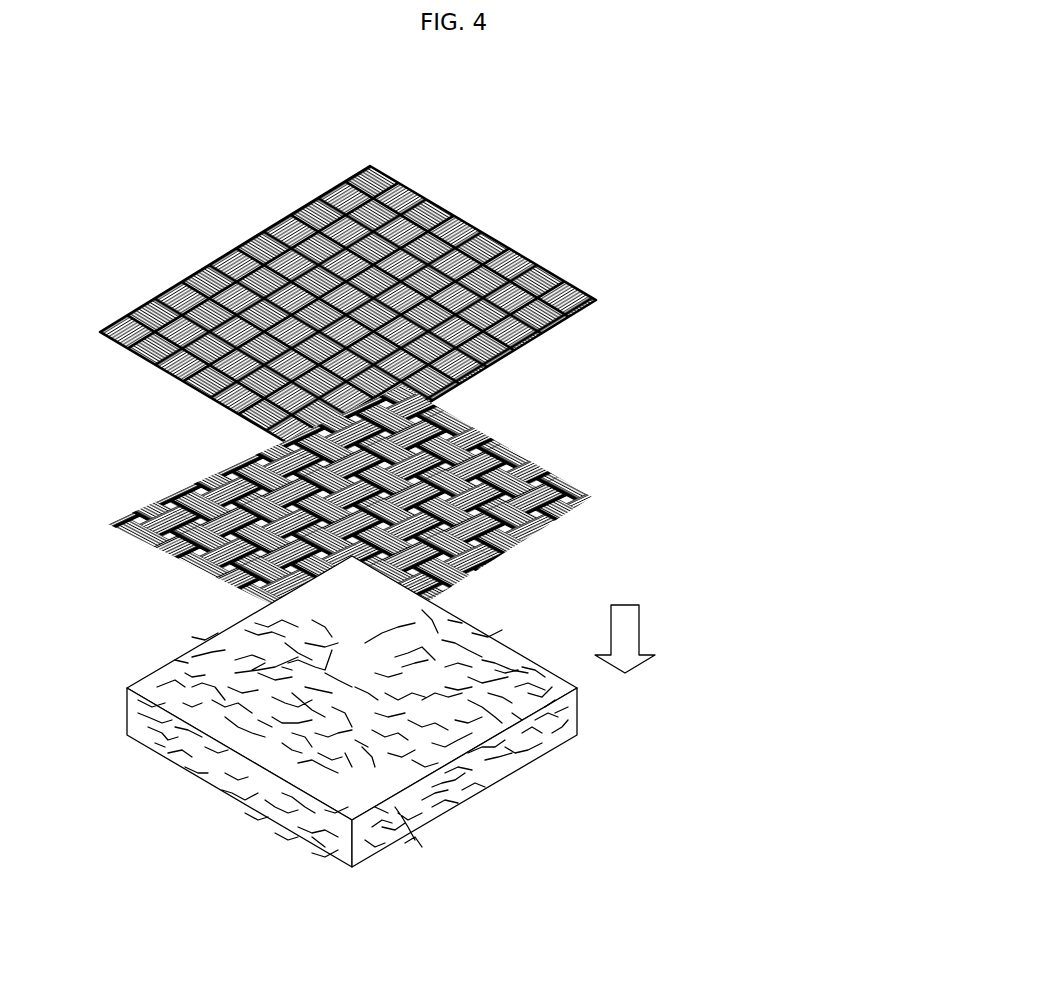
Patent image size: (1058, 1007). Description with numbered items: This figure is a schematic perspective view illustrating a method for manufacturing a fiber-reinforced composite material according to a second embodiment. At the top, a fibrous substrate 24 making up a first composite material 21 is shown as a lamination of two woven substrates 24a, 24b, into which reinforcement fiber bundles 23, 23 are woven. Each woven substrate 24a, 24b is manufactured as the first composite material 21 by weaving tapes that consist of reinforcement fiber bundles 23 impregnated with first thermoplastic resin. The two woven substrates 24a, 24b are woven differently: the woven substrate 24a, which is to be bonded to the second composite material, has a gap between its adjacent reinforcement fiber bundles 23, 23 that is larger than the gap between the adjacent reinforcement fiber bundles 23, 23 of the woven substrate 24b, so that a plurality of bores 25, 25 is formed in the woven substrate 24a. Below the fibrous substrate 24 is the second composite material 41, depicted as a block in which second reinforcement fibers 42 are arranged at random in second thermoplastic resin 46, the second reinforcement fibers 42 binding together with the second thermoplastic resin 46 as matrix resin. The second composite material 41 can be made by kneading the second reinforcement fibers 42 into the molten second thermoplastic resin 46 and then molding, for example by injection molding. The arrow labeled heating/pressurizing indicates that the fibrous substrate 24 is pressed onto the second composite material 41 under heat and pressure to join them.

The first composite material 21 is at (588, 192).
The reinforcement fiber bundles 23 is at (358, 367).
The fibrous substrate 24 is at (82, 283).
The woven substrate 24a is at (483, 455).
The woven substrate 24b is at (368, 178).
The bores 25 is at (157, 520).
The second composite material 41 is at (318, 714).
The second reinforcement fibers 42 is at (185, 735).
The second thermoplastic resin 46 is at (537, 678).